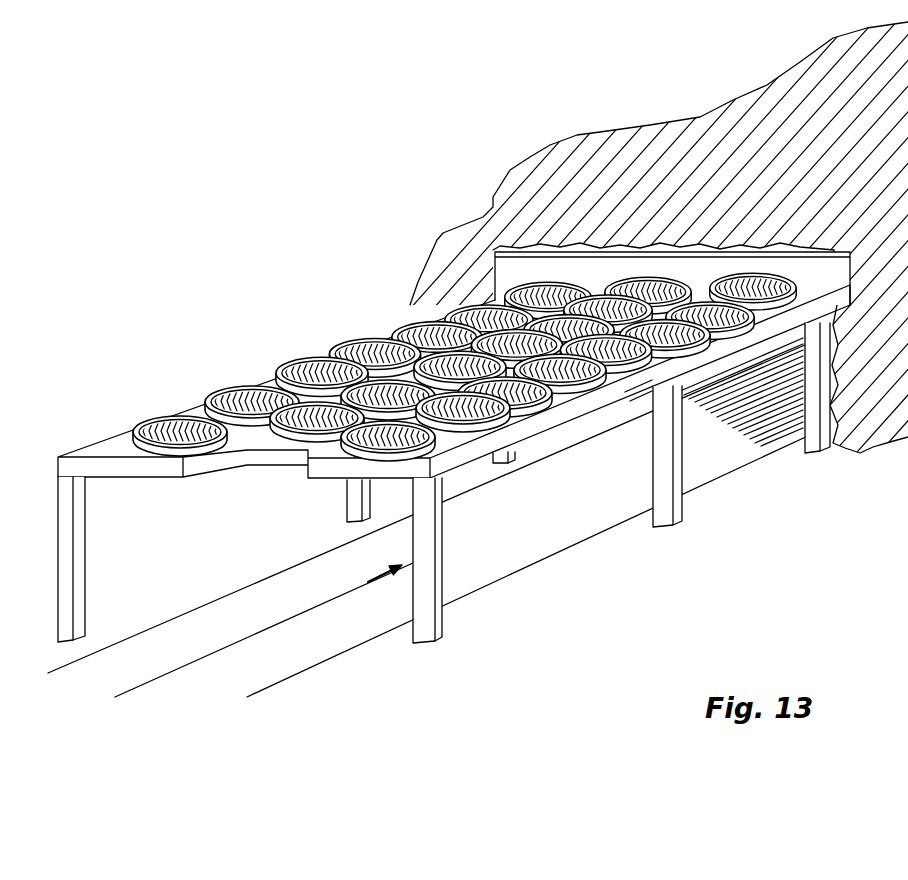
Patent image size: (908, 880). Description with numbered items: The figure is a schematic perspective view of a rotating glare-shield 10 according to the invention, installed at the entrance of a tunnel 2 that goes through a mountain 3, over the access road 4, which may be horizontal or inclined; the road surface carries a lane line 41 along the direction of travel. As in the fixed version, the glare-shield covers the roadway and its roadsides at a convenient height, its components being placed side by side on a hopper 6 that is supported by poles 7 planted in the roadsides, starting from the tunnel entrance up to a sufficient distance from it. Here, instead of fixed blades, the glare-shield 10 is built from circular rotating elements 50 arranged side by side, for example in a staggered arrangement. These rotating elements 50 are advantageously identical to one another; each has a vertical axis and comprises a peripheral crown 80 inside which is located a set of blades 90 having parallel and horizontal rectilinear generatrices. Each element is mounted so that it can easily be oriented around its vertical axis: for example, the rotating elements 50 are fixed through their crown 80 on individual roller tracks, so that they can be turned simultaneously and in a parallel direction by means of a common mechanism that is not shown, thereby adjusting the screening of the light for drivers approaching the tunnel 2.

The tunnel 2 is at (771, 387).
The mountain 3 is at (661, 128).
The access road 4 is at (292, 665).
The lane marking of roadway 41 is at (246, 637).
The hopper 6 is at (118, 468).
The poles 7 is at (81, 543).
The glare-shield 10 is at (312, 349).
The rotating elements 50 is at (449, 387).
The peripheral crown 80 is at (327, 431).
The blades 90 is at (182, 417).